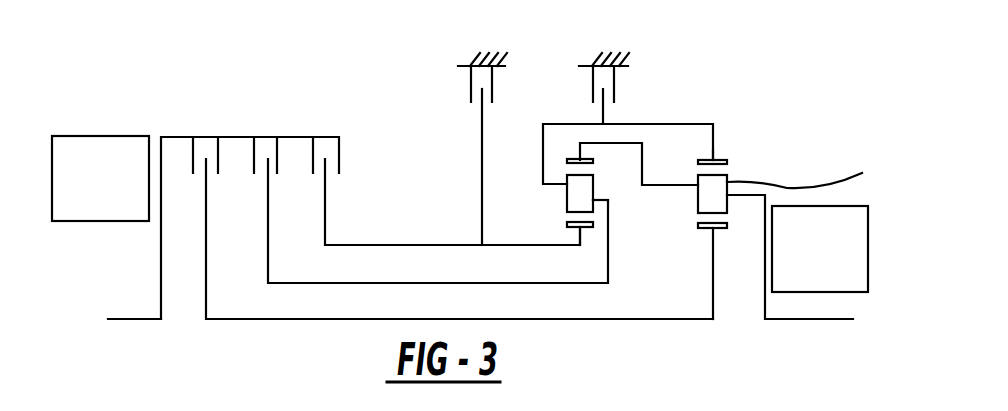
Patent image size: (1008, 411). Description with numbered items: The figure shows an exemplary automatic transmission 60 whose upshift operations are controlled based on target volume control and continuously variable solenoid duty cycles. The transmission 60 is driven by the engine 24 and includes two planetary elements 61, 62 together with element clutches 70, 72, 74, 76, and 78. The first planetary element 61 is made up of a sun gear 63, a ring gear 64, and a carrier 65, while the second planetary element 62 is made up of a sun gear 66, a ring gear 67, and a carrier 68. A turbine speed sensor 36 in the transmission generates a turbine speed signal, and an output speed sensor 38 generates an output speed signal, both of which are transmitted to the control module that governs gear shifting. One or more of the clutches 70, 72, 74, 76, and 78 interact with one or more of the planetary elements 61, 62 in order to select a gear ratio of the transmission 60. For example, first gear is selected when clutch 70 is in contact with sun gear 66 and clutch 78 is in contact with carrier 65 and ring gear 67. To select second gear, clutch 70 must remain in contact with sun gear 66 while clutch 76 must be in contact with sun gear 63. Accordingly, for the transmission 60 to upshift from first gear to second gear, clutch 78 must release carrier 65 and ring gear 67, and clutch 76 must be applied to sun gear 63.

The turbine speed sensor 36 is at (100, 136).
The output speed sensor 38 is at (868, 227).
The automatic transmission 60 is at (158, 43).
The element clutch 70 is at (188, 115).
The element clutch 72 is at (245, 108).
The element clutch 74 is at (353, 108).
The engine 24 is at (482, 61).
The element clutch 76 is at (510, 84).
The element clutch 78 is at (634, 82).
The ring gear 64 is at (568, 159).
The planetary element 61 is at (553, 205).
The planetary element 62 is at (748, 152).
The ring gear 67 is at (720, 160).
The carrier 65 is at (593, 191).
The sun gear 63 is at (590, 227).
The sun gear 66 is at (720, 228).
The carrier 68 is at (808, 167).